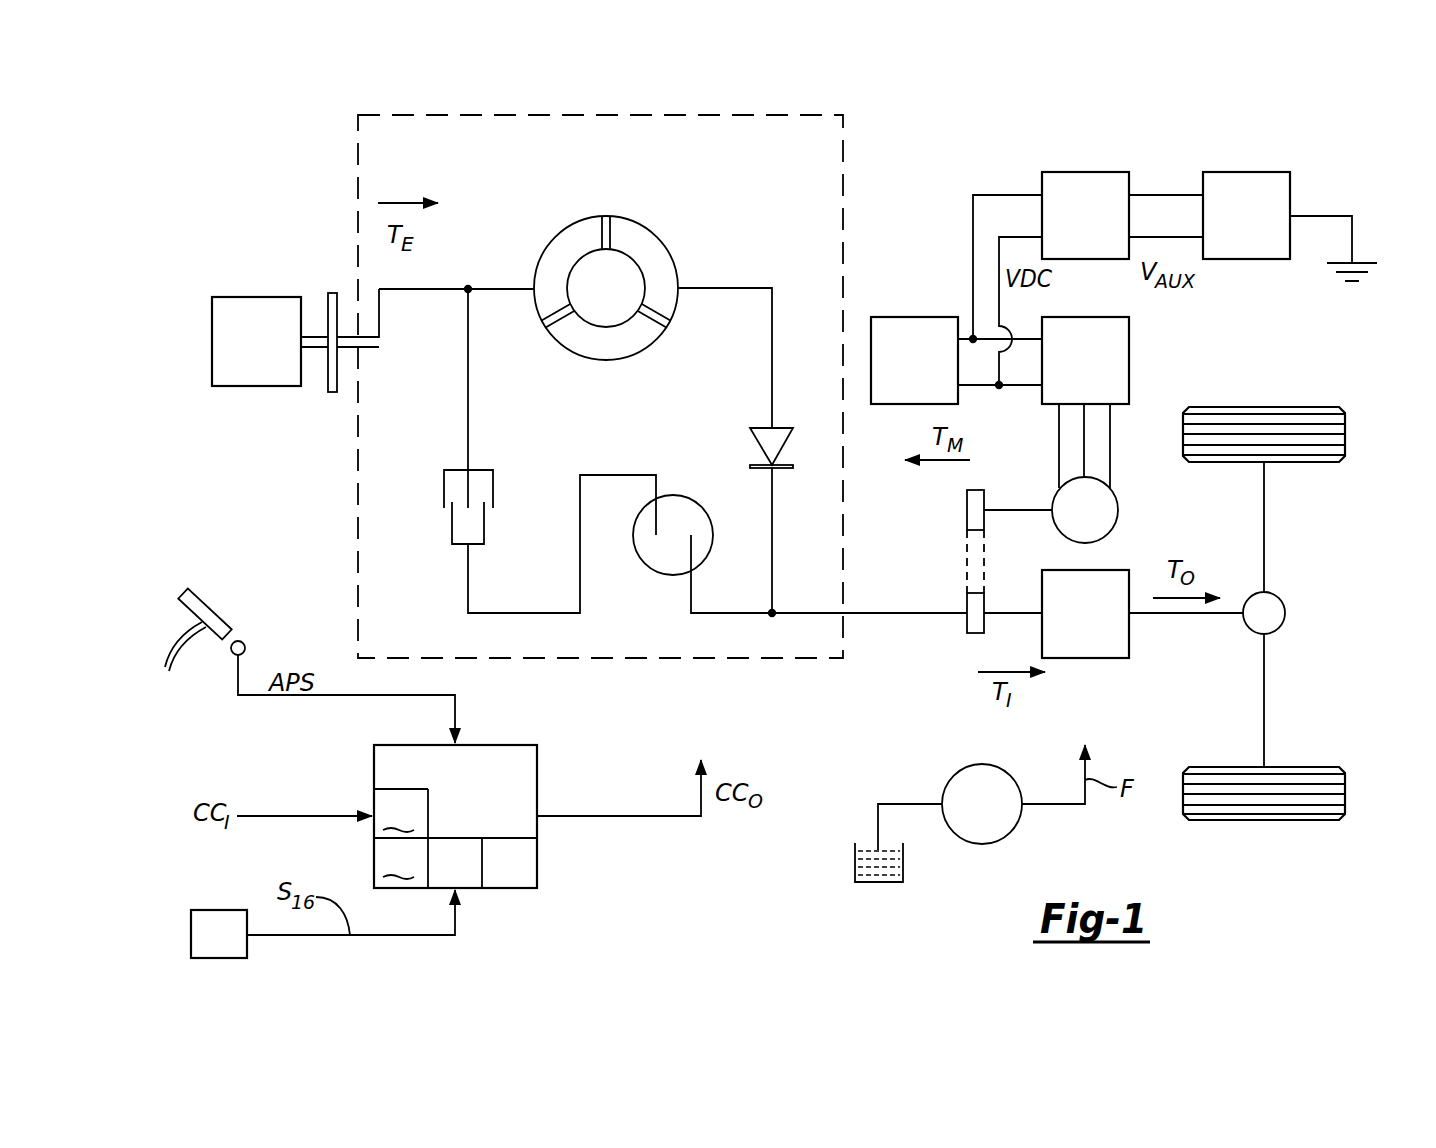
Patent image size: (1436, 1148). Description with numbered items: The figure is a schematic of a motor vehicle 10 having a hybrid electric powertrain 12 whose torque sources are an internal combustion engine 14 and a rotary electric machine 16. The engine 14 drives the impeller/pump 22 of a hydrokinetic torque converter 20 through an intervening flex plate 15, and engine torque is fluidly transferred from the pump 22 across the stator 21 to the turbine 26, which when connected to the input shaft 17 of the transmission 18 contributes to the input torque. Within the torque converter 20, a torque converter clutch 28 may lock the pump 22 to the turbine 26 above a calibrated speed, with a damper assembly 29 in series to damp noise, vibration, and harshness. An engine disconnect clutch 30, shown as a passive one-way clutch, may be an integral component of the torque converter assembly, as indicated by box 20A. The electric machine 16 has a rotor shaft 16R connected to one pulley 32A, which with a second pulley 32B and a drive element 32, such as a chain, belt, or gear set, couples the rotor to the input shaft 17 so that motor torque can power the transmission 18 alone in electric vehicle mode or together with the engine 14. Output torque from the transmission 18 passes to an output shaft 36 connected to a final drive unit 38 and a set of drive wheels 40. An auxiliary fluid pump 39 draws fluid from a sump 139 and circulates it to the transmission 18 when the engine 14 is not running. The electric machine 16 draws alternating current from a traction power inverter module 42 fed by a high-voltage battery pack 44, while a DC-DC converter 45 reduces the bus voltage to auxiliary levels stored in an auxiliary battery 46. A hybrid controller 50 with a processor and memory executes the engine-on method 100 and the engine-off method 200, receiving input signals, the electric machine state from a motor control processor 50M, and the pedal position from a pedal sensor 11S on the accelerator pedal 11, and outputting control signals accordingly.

The motor vehicle 10 is at (1357, 158).
The accelerator pedal 11 is at (215, 604).
The pedal sensor 11S is at (243, 640).
The hybrid electric powertrain 12 is at (1212, 380).
The internal combustion engine 14 is at (257, 297).
The flex plate 15 is at (337, 370).
The rotary electric machine 16 is at (1118, 510).
The rotor shaft 16R is at (1018, 510).
The input shaft 17 is at (1020, 613).
The transmission 18 is at (1085, 658).
The hydrokinetic torque converter 20 is at (603, 286).
The torque converter assembly box 20A is at (459, 115).
The stator 21 is at (603, 361).
The impeller/pump 22 is at (550, 243).
The turbine 26 is at (658, 235).
The torque converter clutch 28 is at (508, 486).
The damper assembly 29 is at (675, 487).
The engine disconnect clutch 30 is at (740, 423).
The drive element 32 is at (935, 561).
The pulley 32A is at (967, 508).
The pulley 32B is at (935, 607).
The output shaft 36 is at (1187, 615).
The final drive unit 38 is at (1285, 613).
The auxiliary fluid pump 39 is at (968, 766).
The drive wheels 40 is at (1345, 432).
The traction power inverter module 42 is at (1129, 360).
The high-voltage battery pack 44 is at (915, 317).
The DC-DC converter 45 is at (1085, 172).
The auxiliary battery 46 is at (1245, 172).
The hybrid controller 50 is at (490, 816).
The motor control processor 50M is at (220, 910).
The method 100 is at (398, 864).
The method 200 is at (398, 817).
The sump 139 is at (855, 870).